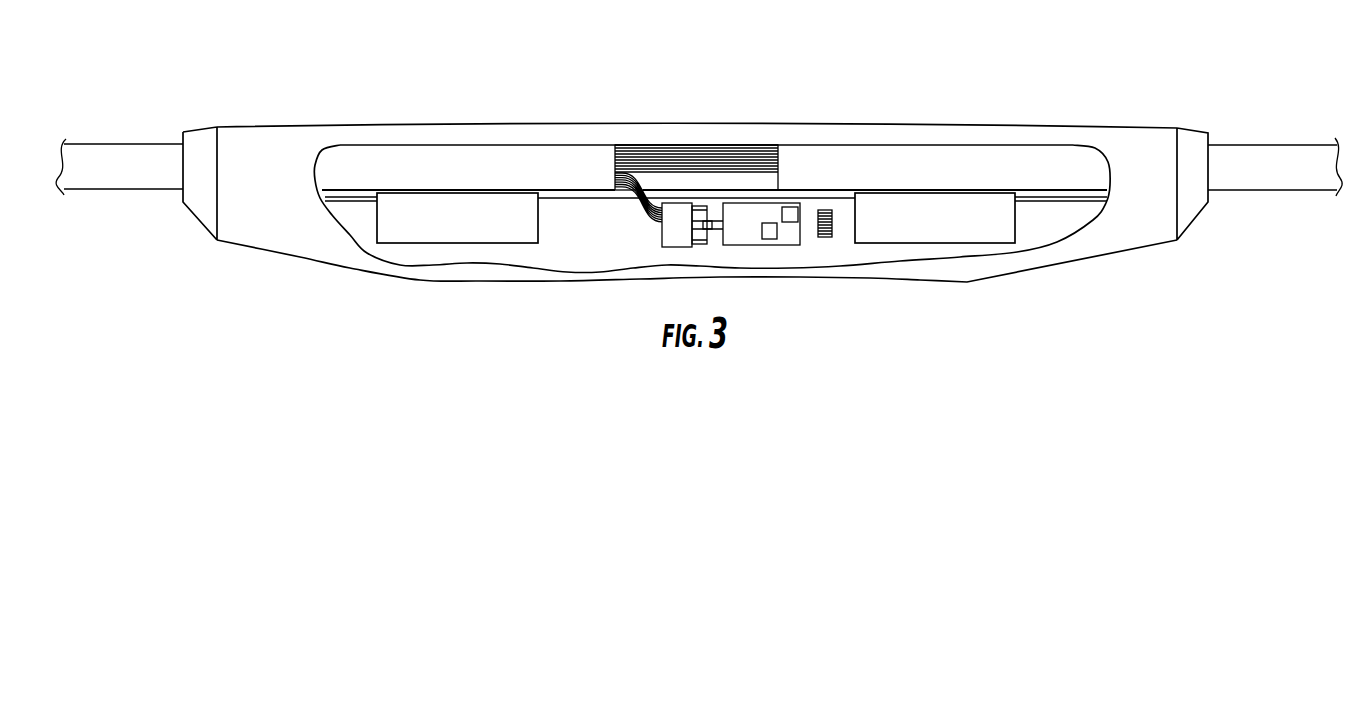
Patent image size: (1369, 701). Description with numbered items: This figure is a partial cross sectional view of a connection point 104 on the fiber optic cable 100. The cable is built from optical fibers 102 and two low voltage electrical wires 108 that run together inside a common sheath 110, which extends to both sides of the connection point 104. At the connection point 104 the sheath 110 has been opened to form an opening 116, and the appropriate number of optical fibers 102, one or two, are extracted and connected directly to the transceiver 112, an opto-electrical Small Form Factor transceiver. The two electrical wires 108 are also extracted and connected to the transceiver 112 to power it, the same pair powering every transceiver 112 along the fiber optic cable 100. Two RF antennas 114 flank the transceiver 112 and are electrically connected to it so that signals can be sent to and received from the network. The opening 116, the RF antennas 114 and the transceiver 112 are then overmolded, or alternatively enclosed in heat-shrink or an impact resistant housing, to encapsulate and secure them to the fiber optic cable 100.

The fiber optic cable 100 is at (949, 75).
The optical fibers 102 is at (643, 185).
The connection point 104 is at (468, 123).
The electrical wires 108 is at (633, 176).
The sheath 110 is at (386, 167).
The transceiver 112 is at (800, 233).
The RF antenna 114 is at (377, 219).
The opening 116 is at (761, 143).